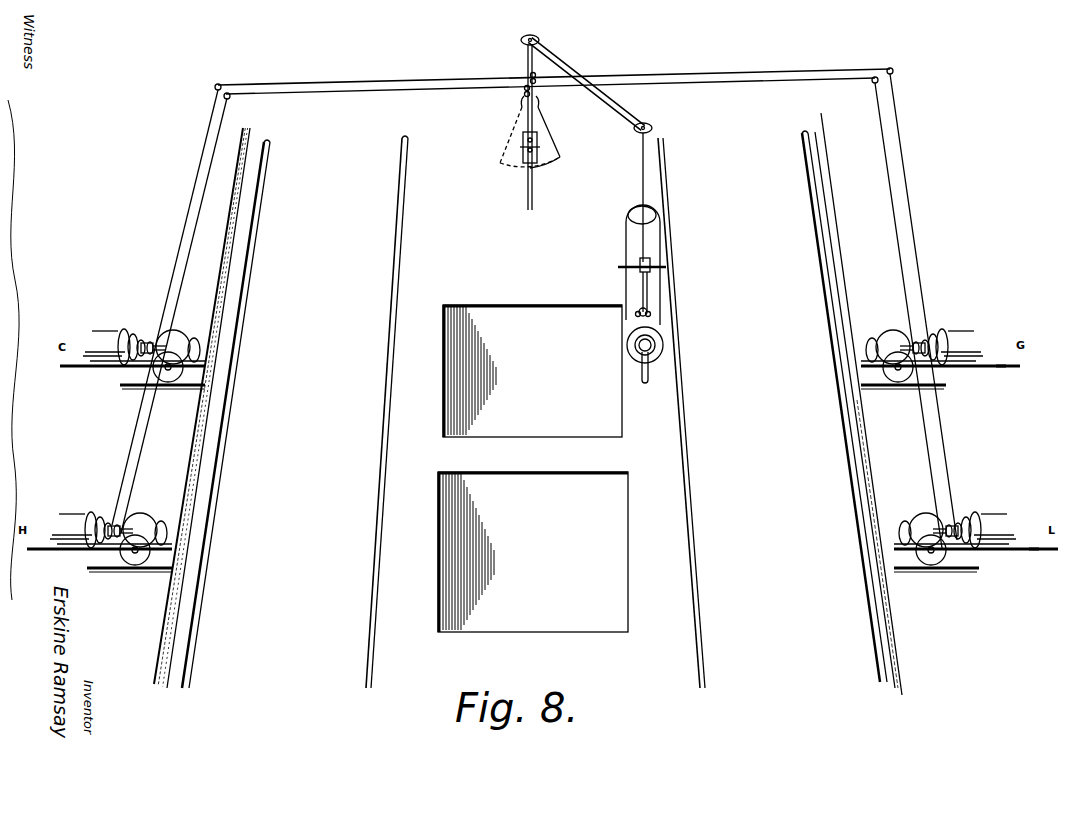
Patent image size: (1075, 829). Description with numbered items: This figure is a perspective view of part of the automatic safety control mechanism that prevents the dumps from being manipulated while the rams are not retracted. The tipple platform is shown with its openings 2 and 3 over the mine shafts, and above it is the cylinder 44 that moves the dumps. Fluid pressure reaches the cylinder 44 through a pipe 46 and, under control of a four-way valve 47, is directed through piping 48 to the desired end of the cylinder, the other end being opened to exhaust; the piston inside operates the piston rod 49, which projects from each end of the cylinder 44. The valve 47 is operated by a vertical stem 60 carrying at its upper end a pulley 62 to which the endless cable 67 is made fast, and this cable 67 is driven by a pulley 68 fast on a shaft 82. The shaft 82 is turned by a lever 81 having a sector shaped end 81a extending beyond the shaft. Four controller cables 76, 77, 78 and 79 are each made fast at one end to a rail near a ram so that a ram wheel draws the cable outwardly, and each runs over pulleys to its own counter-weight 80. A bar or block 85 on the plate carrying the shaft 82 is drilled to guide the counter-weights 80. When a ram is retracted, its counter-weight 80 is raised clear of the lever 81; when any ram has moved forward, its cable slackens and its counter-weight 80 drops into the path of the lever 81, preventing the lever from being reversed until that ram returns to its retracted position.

The opening 2 is at (616, 413).
The opening 3 is at (615, 540).
The cylinder 44 is at (655, 298).
The pipe 46 is at (668, 267).
The four-way valve 47 is at (652, 262).
The piping 48 is at (649, 285).
The piston rod 49 is at (654, 374).
The vertical stem 60 is at (641, 168).
The pulley 62 is at (654, 127).
The cable 67 is at (576, 62).
The pulley 68 is at (540, 38).
The controller cable 76 is at (953, 455).
The controller cable 77 is at (905, 268).
The controller cable 78 is at (138, 466).
The controller cable 79 is at (170, 288).
The counter-weight 80 is at (520, 146).
The lever 81 is at (524, 108).
The sector shaped end 81a is at (552, 158).
The shaft 82 is at (539, 95).
The bar or block 85 is at (540, 150).